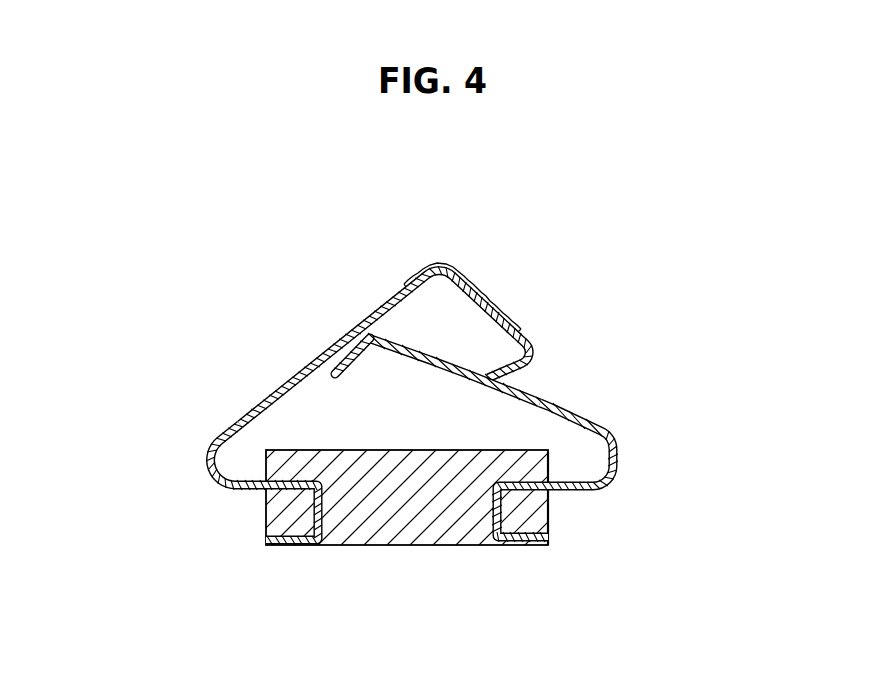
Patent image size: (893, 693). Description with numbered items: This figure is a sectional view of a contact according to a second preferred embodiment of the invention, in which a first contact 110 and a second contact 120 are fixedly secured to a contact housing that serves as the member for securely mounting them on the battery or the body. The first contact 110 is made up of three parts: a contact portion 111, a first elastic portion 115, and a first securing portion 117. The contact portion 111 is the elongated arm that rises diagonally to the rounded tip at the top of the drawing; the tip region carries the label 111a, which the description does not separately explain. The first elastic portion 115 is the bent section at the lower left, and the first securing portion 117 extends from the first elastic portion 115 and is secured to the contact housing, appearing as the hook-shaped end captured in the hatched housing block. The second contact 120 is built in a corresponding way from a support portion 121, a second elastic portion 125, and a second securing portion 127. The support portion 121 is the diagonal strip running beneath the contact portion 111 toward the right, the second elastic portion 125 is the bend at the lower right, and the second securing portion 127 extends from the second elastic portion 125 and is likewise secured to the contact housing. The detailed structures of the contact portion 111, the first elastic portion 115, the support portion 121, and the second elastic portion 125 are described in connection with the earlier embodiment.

The first contact 110 is at (294, 371).
The contact portion 111 is at (265, 393).
The bent tip portion of spring arm 111a is at (441, 266).
The first elastic portion 115 is at (207, 457).
The first securing portion 117 is at (313, 511).
The second contact 120 is at (550, 437).
The support portion 121 is at (550, 404).
The second elastic portion 125 is at (617, 450).
The second securing portion 127 is at (590, 512).